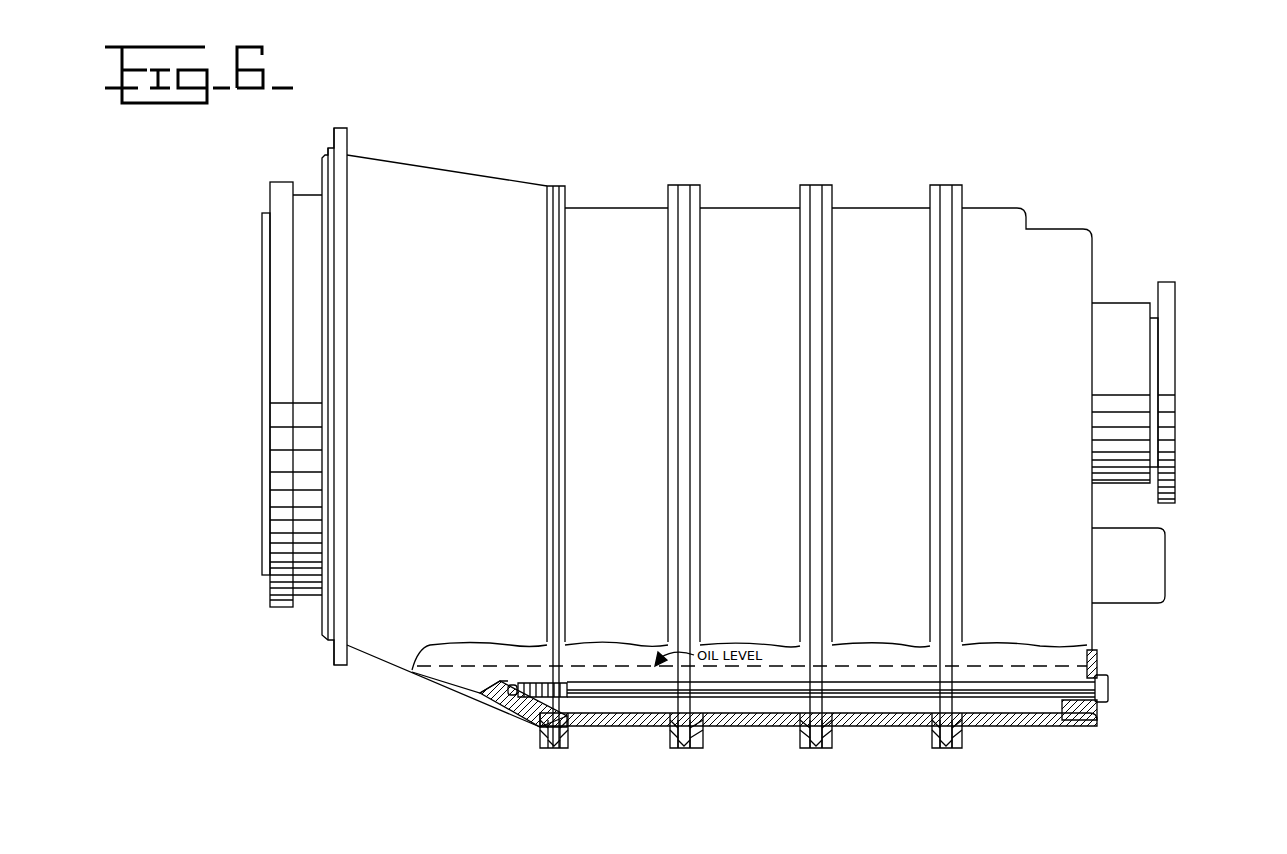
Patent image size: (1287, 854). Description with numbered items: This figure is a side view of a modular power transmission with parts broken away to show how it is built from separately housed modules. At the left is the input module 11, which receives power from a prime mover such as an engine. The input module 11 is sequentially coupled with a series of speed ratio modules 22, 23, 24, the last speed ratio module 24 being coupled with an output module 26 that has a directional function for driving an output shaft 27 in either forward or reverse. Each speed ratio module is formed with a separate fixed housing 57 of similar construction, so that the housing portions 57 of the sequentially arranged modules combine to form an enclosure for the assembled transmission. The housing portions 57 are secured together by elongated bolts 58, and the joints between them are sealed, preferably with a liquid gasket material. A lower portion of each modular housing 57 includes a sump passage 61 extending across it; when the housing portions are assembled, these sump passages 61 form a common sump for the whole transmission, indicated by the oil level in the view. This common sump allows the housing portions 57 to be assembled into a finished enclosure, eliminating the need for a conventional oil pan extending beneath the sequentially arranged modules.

The input module 11 is at (449, 167).
The speed ratio module 22 is at (607, 197).
The speed ratio module 23 is at (728, 199).
The speed ratio module 24 is at (864, 199).
The output module 26 is at (1057, 212).
The output shaft 27 is at (1165, 466).
The fixed housing 57 is at (632, 313).
The elongated bolt 58 is at (1105, 704).
The sump passage 61 is at (617, 710).